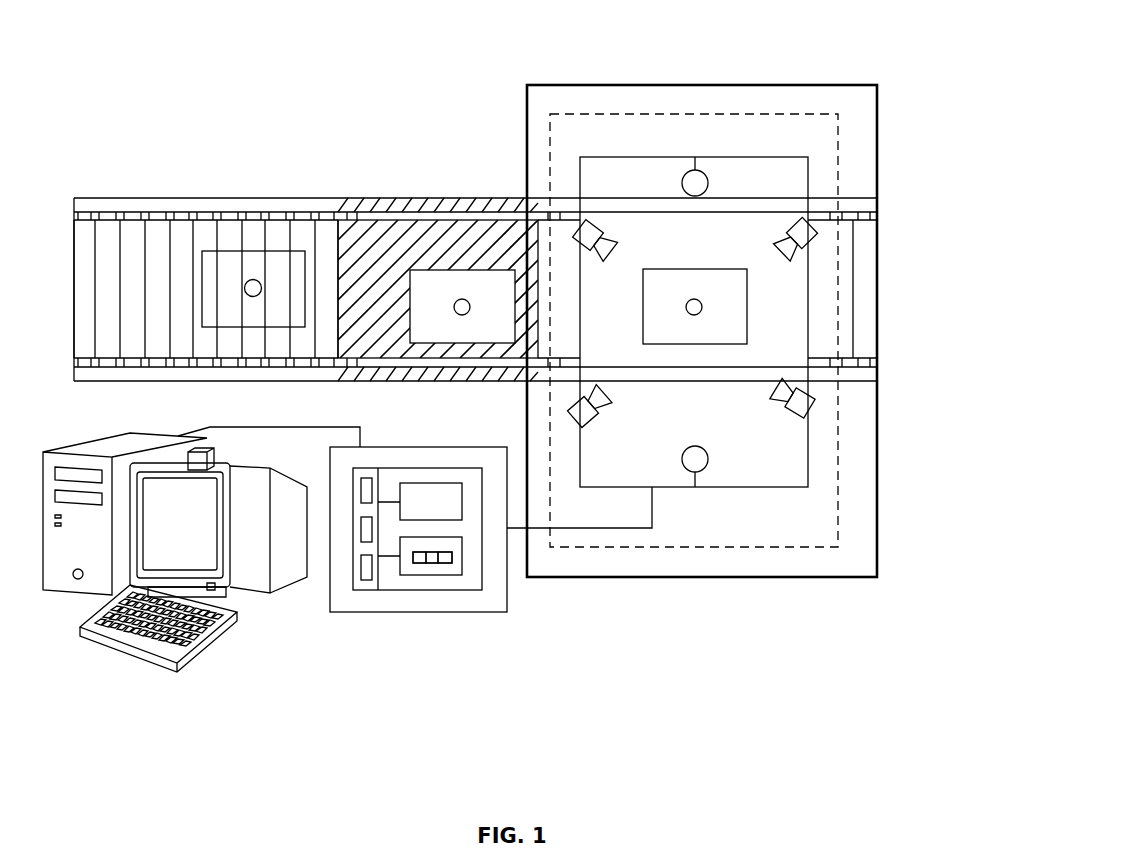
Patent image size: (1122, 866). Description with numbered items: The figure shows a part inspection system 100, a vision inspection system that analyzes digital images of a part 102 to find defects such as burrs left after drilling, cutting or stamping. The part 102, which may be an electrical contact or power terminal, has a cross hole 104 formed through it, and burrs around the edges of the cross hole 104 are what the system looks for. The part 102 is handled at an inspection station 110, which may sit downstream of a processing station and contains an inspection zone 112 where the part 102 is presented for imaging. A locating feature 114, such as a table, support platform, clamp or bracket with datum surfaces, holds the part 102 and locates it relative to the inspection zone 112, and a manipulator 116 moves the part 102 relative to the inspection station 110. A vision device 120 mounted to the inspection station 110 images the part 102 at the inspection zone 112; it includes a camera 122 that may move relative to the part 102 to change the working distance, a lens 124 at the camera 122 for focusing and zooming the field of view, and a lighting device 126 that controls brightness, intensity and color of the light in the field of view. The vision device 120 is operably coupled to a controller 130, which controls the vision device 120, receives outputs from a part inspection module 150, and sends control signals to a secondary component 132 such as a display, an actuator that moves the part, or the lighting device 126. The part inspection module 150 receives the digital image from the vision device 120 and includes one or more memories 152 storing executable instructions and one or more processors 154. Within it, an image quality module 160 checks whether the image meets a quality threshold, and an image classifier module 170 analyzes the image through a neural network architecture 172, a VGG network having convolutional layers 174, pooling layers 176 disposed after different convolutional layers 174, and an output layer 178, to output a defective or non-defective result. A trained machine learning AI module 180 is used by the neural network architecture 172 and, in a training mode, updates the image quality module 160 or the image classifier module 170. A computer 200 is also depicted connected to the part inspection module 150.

The part inspection system 100 is at (411, 76).
The part 102 is at (228, 247).
The cross hole 104 is at (254, 276).
The inspection station 110 is at (700, 85).
The inspection zone 112 is at (786, 114).
The locating feature 114 is at (485, 360).
The manipulator 116 is at (429, 194).
The vision device 120 is at (776, 493).
The camera 122 is at (598, 217).
The lens 124 is at (783, 407).
The lighting device 126 is at (683, 186).
The controller 130 is at (367, 612).
The secondary component 132 is at (830, 236).
The part inspection module 150 is at (438, 590).
The memory 152 is at (372, 490).
The processor 154 is at (380, 566).
The image quality module 160 is at (462, 505).
The image classifier module 170 is at (462, 565).
The neural network architecture 172 is at (433, 563).
The convolutional layers 174 is at (408, 537).
The pooling layers 176 is at (427, 563).
The output layer 178 is at (452, 556).
The AI module 180 is at (360, 528).
The computer 200 is at (360, 563).